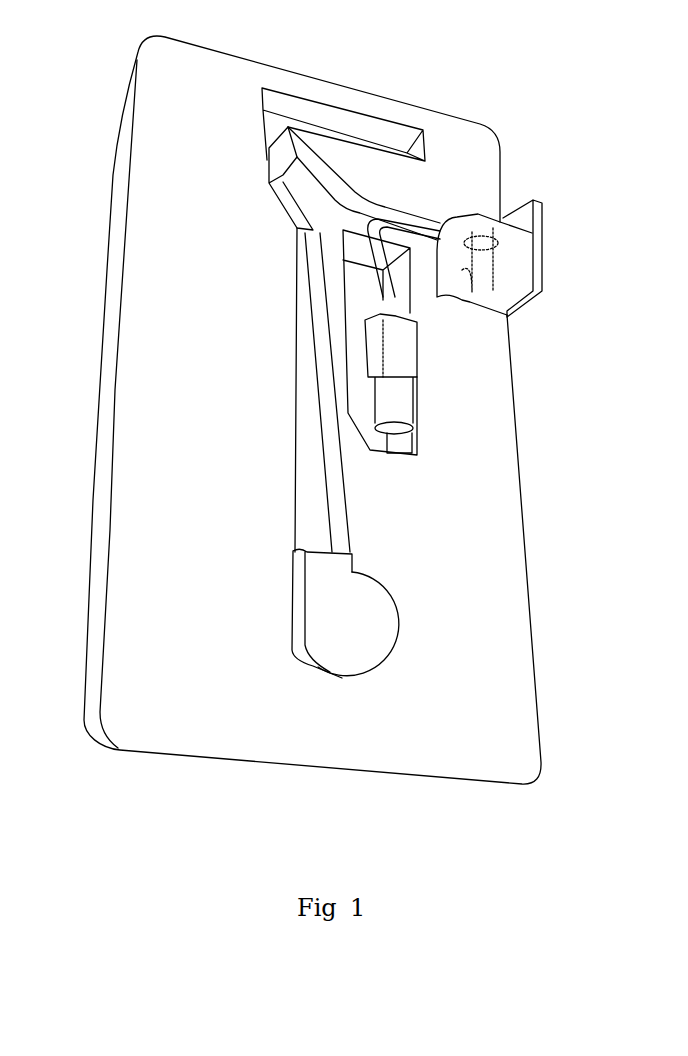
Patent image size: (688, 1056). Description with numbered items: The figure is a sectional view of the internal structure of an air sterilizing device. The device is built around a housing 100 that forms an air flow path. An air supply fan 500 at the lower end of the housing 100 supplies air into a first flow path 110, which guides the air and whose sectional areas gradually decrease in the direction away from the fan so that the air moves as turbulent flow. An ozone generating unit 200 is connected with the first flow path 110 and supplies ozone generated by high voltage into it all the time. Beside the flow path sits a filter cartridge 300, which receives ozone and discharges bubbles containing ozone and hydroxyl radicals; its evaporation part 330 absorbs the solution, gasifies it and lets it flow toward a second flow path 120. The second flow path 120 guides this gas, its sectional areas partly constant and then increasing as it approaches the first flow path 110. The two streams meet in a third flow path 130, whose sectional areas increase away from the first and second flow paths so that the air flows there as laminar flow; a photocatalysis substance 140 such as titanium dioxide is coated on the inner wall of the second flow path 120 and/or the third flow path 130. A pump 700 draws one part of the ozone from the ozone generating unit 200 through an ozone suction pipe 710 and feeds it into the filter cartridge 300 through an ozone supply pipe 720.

The housing 100 is at (202, 720).
The first flow path 110 is at (312, 506).
The second flow path 120 is at (367, 202).
The third flow path 130 is at (303, 123).
The photocatalysis substance 140 is at (267, 152).
The ozone generating unit 200 is at (297, 293).
The filter cartridge 300 is at (540, 240).
The evaporation part 330 is at (542, 278).
The air supply fan 500 is at (344, 650).
The pump 700 is at (420, 350).
The ozone suction pipe 710 is at (370, 325).
The ozone supply pipe 720 is at (325, 255).